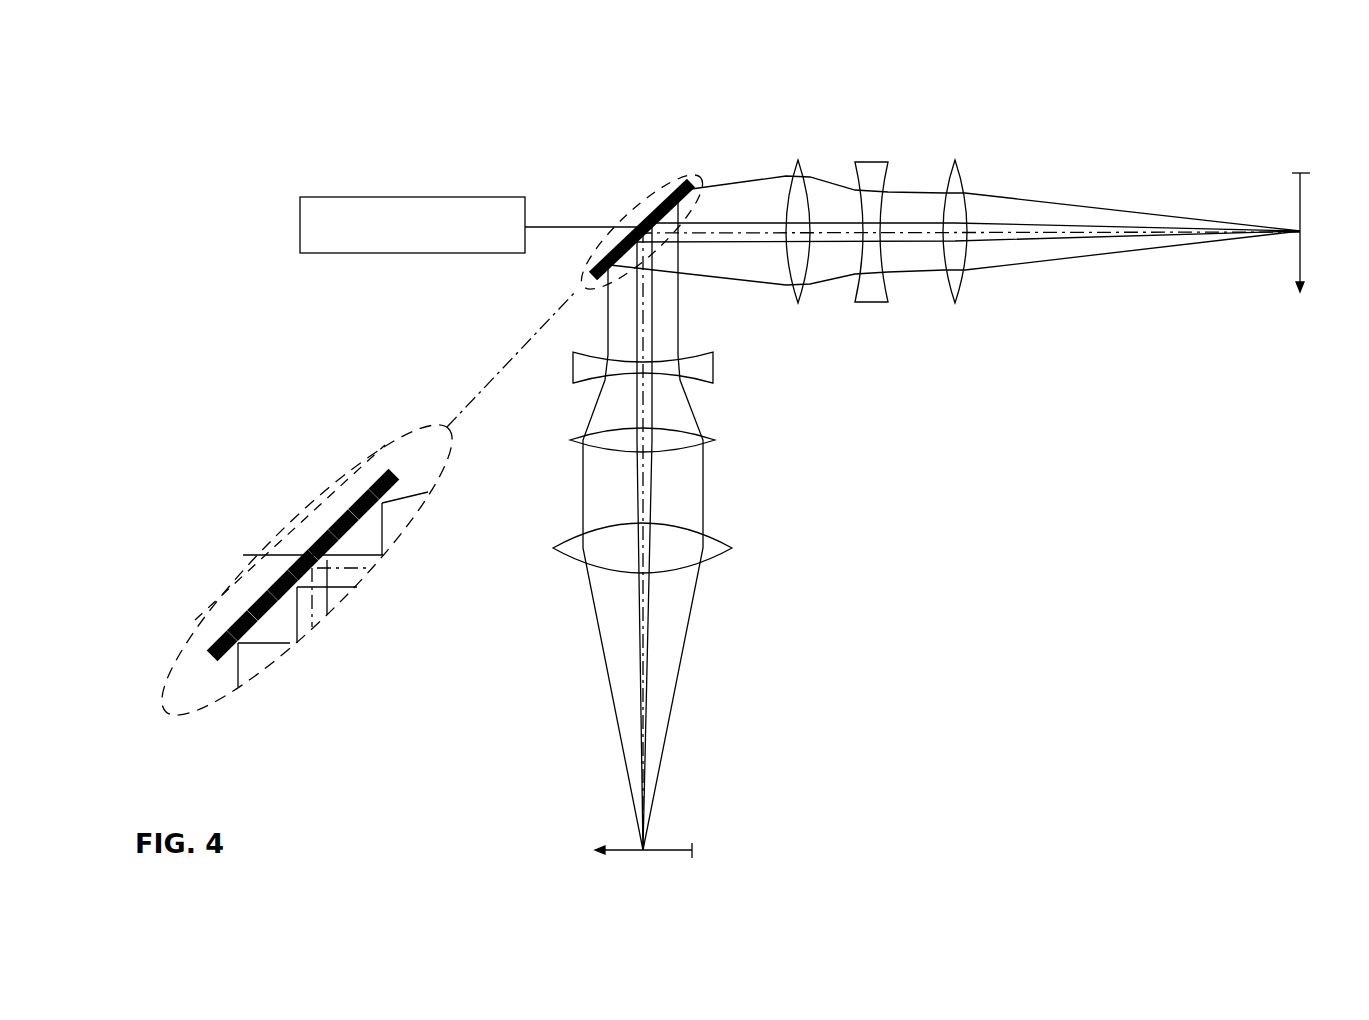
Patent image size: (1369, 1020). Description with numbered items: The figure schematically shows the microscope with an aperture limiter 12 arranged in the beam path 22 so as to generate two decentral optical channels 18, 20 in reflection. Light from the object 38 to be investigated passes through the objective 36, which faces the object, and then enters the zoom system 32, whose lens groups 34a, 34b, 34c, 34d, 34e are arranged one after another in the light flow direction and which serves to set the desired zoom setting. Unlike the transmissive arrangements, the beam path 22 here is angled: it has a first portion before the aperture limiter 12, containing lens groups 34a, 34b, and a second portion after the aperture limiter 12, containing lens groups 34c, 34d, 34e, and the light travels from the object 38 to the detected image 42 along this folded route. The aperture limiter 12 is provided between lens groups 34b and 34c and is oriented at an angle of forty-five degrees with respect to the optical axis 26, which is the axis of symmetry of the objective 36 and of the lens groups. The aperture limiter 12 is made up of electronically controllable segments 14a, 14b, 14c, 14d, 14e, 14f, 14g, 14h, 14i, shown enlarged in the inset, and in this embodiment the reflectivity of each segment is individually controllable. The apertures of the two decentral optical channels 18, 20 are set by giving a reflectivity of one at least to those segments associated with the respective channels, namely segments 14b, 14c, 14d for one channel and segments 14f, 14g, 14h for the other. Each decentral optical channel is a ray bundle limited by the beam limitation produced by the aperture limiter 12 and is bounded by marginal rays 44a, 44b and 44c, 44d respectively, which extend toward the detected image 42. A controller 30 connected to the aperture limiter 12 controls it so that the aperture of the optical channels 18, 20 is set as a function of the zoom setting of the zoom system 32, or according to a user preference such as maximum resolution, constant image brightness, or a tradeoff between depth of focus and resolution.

The aperture limiter 12 is at (575, 243).
The electronically controllable segment 14a is at (377, 470).
The electronically controllable segment 14b is at (360, 495).
The electronically controllable segment 14c is at (340, 515).
The electronically controllable segment 14d is at (320, 535).
The electronically controllable segment 14e is at (300, 555).
The electronically controllable segment 14f is at (280, 577).
The electronically controllable segment 14g is at (257, 598).
The electronically controllable segment 14h is at (233, 618).
The electronically controllable segment 14i is at (215, 638).
The decentral optical channel 18 is at (724, 178).
The decentral optical channel 20 is at (733, 300).
The beam path 22 is at (733, 668).
The optical axis 26 is at (645, 768).
The controller 30 is at (462, 254).
The zoom system 32 is at (952, 124).
The lens group 34a is at (715, 443).
The lens group 34b is at (713, 383).
The lens group 34c is at (798, 303).
The lens group 34d is at (888, 300).
The lens group 34e is at (955, 303).
The objective 36 is at (732, 555).
The object to be investigated 38 is at (596, 846).
The detected image 42 is at (1300, 185).
The marginal ray 44a is at (969, 192).
The marginal ray 44b is at (1144, 228).
The marginal ray 44c is at (964, 274).
The marginal ray 44d is at (1190, 237).